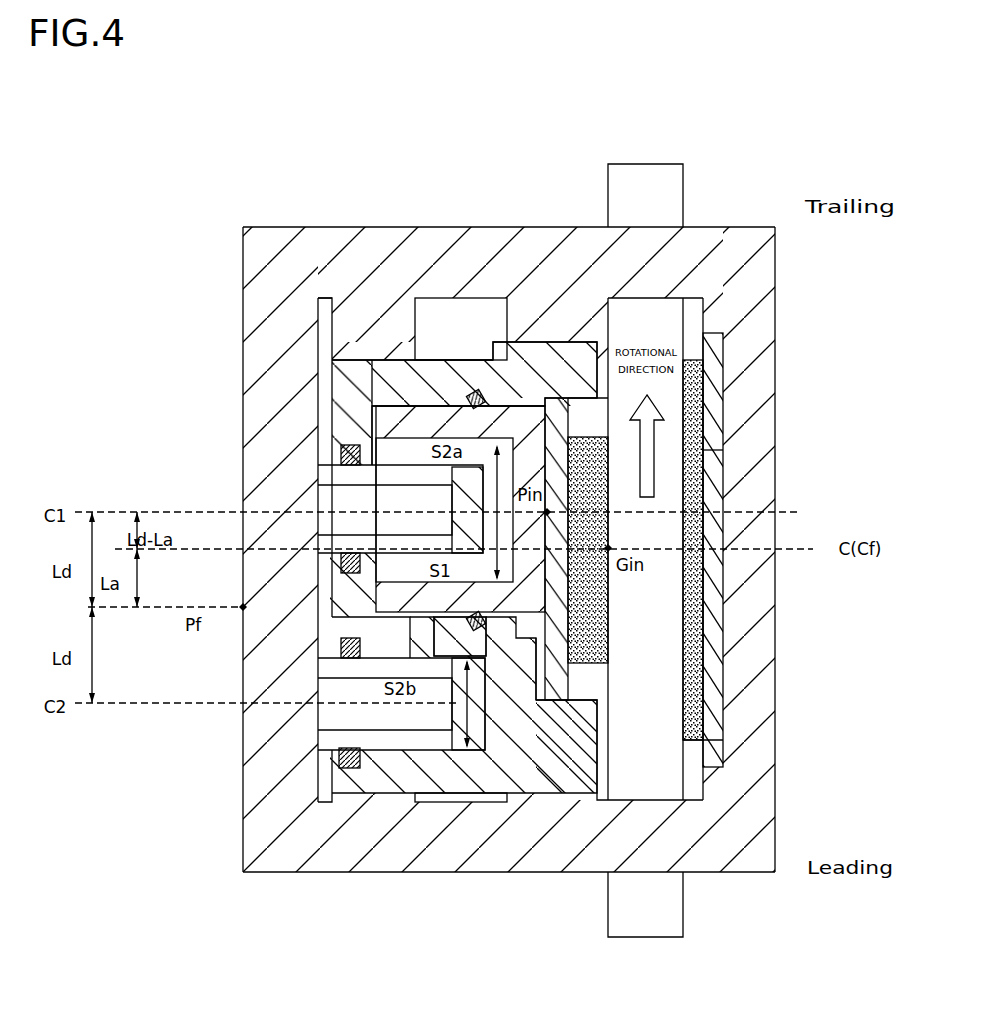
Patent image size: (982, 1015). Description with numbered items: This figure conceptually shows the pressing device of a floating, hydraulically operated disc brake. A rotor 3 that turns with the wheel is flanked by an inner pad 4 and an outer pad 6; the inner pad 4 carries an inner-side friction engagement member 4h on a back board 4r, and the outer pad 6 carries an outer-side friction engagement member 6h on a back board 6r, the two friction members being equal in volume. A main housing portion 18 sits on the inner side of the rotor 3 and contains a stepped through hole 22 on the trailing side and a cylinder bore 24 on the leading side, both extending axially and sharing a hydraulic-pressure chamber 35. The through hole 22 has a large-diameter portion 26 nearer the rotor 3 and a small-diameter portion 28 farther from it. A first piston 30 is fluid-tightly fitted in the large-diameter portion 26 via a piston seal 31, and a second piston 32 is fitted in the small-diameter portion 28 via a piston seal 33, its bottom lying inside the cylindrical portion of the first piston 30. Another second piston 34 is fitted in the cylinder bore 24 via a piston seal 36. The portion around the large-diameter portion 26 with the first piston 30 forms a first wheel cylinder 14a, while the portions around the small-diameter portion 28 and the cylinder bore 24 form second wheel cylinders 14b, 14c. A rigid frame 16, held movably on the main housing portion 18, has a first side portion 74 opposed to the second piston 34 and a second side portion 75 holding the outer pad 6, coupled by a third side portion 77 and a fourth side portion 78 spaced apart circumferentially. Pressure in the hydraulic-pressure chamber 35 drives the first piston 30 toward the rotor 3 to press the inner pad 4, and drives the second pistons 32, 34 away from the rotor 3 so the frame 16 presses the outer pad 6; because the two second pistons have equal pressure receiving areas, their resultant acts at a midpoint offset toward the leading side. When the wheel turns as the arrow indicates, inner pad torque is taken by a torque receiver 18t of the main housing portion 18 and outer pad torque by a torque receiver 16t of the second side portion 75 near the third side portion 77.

The rotor 3 is at (663, 178).
The inner pad 4 is at (582, 703).
The back board 4r is at (540, 705).
The inner-side friction engagement member 4h is at (597, 638).
The outer pad 6 is at (700, 328).
The outer-side friction engagement member 6h is at (697, 703).
The back board 6r is at (705, 745).
The first wheel cylinder 14a is at (376, 388).
The second wheel cylinder 14b is at (328, 398).
The second wheel cylinder 14c is at (328, 790).
The frame 16 is at (308, 195).
The torque receiver 16t is at (723, 348).
The main housing portion 18 is at (437, 755).
The torque receiver 18t is at (540, 378).
The through hole 22 is at (590, 418).
The cylinder bore 24 is at (485, 663).
The large-diameter portion 26 is at (433, 400).
The small-diameter portion 28 is at (320, 492).
The first piston 30 is at (412, 405).
The piston seal 31 is at (478, 398).
The second piston 32 is at (341, 452).
The piston seal 33 is at (341, 562).
The second piston 34 is at (343, 650).
The hydraulic-pressure chamber 35 is at (723, 450).
The piston seal 36 is at (348, 768).
The first side portion 74 is at (265, 378).
The second side portion 75 is at (762, 597).
The third side portion 77 is at (697, 230).
The fourth side portion 78 is at (407, 855).